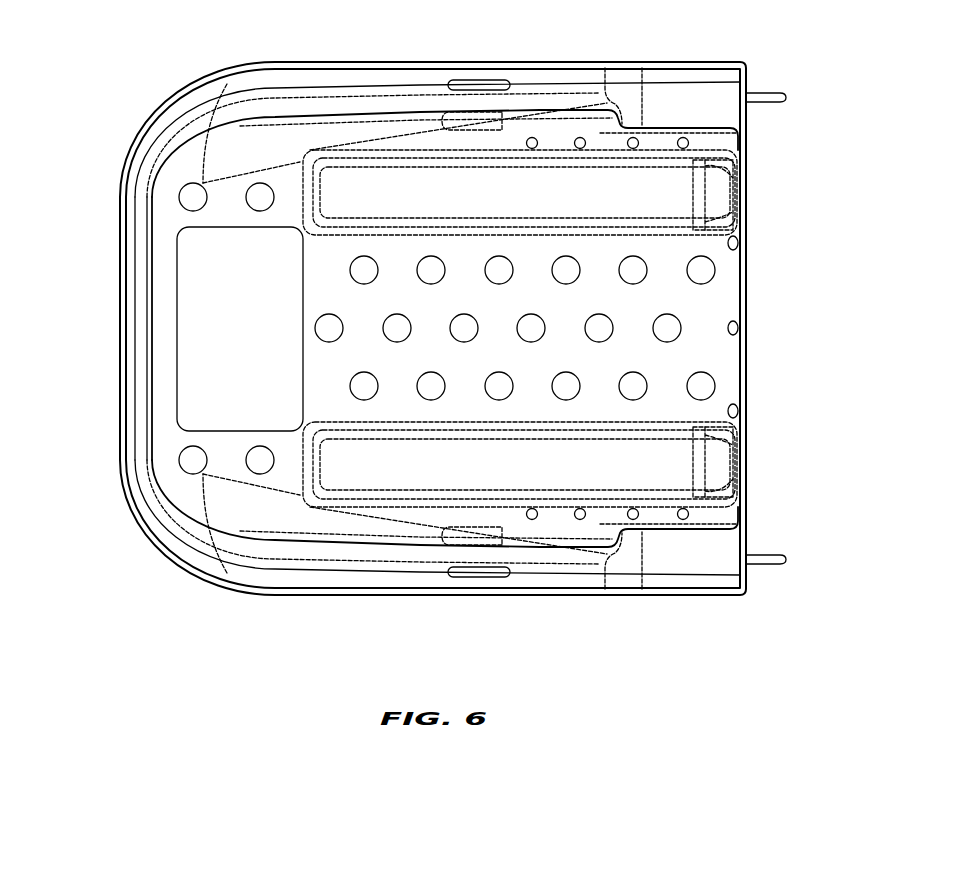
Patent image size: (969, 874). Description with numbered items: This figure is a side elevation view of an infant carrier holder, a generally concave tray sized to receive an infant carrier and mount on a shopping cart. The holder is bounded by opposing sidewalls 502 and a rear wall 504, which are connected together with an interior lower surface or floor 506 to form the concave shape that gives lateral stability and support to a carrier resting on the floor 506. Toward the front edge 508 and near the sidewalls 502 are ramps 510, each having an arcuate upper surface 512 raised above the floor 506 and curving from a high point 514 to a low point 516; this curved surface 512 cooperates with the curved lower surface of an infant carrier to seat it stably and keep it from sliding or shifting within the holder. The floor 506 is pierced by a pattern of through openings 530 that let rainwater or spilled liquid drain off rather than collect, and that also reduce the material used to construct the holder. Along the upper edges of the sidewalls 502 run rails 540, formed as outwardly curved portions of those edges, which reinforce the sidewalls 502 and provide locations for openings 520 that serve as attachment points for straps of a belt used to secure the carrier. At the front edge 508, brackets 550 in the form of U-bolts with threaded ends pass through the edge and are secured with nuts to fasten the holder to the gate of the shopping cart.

The sidewalls 502 is at (385, 100).
The rear wall 504 is at (162, 315).
The floor 506 is at (712, 293).
The front edge 508 is at (747, 349).
The ramps 510 is at (520, 328).
The arcuate upper surface 512 is at (502, 183).
The high point 514 is at (665, 200).
The low point 516 is at (337, 177).
The openings 520 is at (472, 80).
The through openings 530 is at (385, 318).
The rails 540 is at (582, 75).
The brackets 550 is at (765, 93).